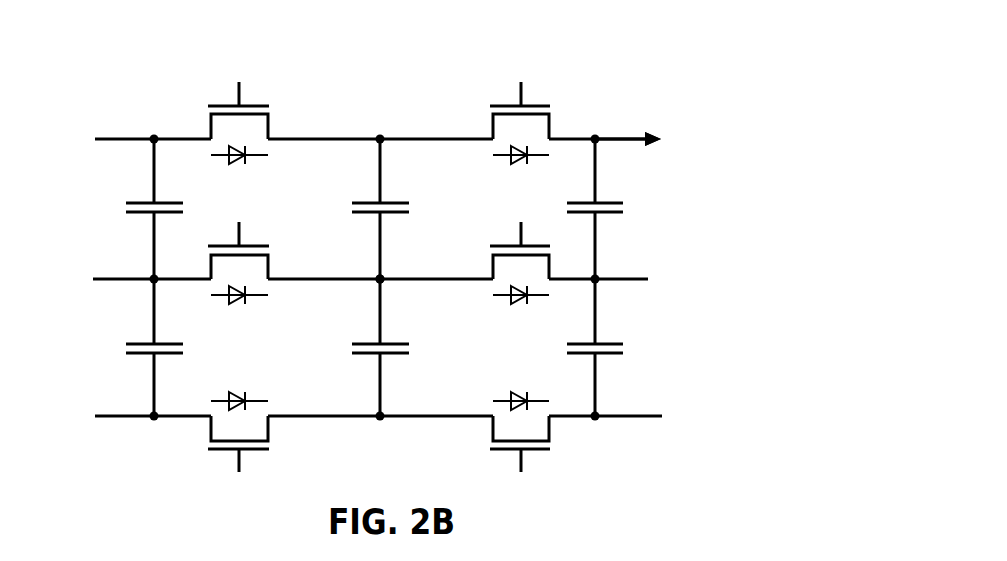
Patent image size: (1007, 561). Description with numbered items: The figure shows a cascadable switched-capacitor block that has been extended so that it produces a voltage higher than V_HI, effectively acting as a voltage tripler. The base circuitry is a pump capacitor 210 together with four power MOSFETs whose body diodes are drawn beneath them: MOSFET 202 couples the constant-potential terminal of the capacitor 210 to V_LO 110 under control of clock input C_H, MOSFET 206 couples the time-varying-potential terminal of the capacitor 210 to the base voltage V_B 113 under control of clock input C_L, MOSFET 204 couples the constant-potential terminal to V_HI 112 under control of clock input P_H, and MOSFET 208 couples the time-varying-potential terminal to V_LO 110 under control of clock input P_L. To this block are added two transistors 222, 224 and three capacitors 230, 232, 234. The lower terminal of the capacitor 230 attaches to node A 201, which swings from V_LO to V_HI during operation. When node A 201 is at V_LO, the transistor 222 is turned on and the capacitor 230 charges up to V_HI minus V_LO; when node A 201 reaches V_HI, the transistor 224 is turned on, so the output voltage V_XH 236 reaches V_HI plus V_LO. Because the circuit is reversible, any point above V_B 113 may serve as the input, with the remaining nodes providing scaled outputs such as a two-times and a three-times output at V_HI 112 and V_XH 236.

The V_HI 112 is at (379, 208).
The V_LO 110 is at (380, 347).
The V_B 113 is at (278, 414).
The output voltage V_XH 236 is at (654, 138).
The capacitor 232 is at (134, 209).
The capacitor 230 is at (360, 209).
The capacitor 234 is at (617, 209).
The capacitor 210 is at (360, 349).
The node A 201 is at (380, 279).
The transistor 222 is at (238, 111).
The transistor 224 is at (520, 111).
The MOSFET 202 is at (238, 252).
The MOSFET 204 is at (520, 252).
The MOSFET 206 is at (238, 446).
The MOSFET 208 is at (520, 447).